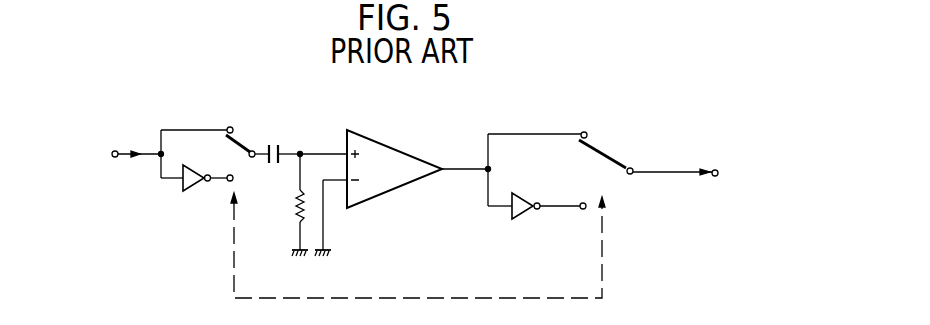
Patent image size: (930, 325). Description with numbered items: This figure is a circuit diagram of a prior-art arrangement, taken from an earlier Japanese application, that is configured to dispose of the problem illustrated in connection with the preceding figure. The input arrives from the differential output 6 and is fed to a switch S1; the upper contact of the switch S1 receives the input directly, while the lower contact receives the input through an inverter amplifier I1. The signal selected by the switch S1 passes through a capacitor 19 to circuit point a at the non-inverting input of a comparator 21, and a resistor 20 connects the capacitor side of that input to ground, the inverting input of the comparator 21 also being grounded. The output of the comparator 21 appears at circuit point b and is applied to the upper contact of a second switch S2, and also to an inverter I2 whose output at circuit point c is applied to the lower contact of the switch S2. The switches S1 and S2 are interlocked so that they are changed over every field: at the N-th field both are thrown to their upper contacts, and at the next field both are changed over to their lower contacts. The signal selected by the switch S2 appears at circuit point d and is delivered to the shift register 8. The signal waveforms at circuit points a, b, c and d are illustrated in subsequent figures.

The differential amplifier output 6 is at (100, 156).
The shift register 8 is at (753, 168).
The capacitor 19 is at (273, 145).
The resistor 20 is at (297, 207).
The comparator 21 is at (392, 189).
The switch S1 is at (197, 140).
The switch S2 is at (613, 157).
The inverter amplifier I1 is at (199, 189).
The inverter I2 is at (525, 213).
The circuit point a is at (327, 152).
The circuit point b is at (462, 165).
The circuit point c is at (565, 210).
The circuit point d is at (687, 176).